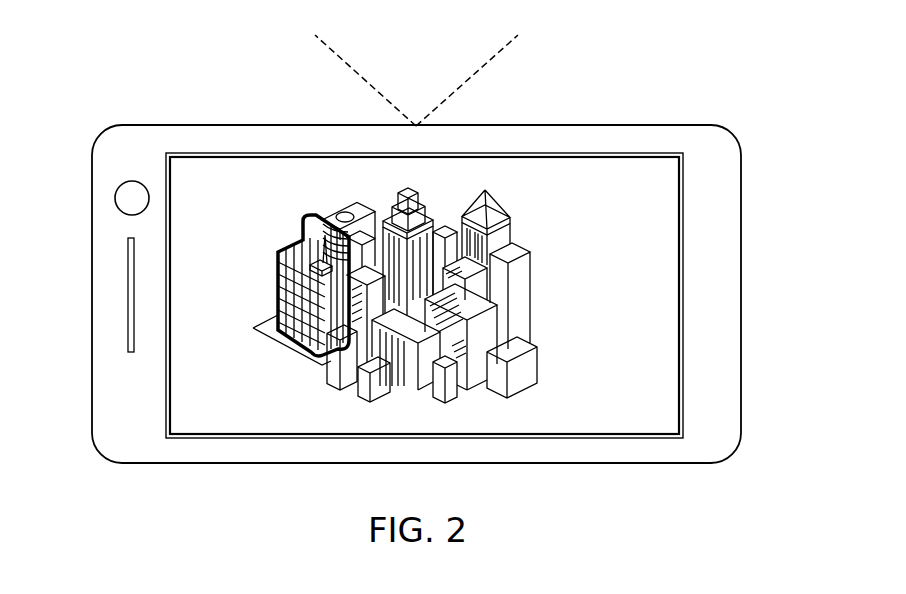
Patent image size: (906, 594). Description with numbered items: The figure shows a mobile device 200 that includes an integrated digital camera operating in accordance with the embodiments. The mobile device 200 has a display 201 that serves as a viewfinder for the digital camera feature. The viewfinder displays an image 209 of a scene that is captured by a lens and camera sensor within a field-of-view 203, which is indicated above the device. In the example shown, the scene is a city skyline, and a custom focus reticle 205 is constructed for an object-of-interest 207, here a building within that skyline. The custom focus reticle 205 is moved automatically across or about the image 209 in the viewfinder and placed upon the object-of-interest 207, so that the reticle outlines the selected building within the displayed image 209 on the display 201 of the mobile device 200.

The mobile device 200 is at (741, 296).
The display 201 is at (663, 201).
The field-of-view 203 is at (457, 56).
The custom focus reticle 205 is at (302, 348).
The object-of-interest 207 is at (273, 317).
The image 209 is at (510, 192).